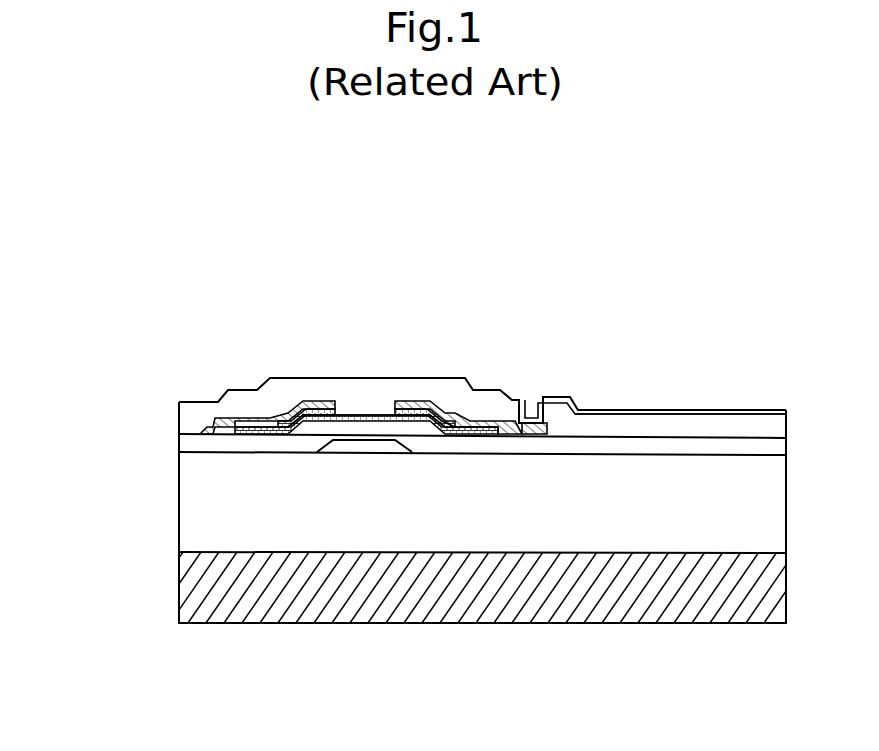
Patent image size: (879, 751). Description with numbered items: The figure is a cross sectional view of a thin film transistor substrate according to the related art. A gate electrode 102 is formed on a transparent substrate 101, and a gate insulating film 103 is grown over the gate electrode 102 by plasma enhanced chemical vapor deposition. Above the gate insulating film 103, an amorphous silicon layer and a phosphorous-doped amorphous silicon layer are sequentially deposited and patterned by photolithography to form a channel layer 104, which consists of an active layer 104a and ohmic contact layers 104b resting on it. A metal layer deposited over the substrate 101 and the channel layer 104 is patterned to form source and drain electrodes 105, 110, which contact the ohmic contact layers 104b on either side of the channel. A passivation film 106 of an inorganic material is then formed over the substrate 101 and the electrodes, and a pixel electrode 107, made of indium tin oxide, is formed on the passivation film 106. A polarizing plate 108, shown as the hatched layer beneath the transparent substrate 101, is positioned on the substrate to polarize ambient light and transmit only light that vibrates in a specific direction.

The transparent substrate 101 is at (178, 493).
The gate electrode 102 is at (368, 443).
The gate insulating film 103 is at (540, 436).
The channel layer 104 is at (393, 277).
The active layer 104a is at (360, 414).
The ohmic contact layers 104b is at (320, 406).
The source electrode 105 is at (281, 404).
The passivation film 106 is at (600, 432).
The pixel electrode 107 is at (716, 410).
The polarizing plate 108 is at (187, 593).
The drain electrode 110 is at (452, 410).